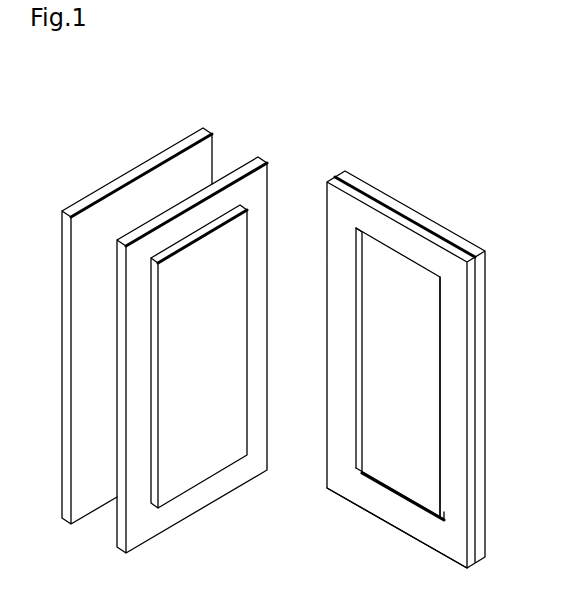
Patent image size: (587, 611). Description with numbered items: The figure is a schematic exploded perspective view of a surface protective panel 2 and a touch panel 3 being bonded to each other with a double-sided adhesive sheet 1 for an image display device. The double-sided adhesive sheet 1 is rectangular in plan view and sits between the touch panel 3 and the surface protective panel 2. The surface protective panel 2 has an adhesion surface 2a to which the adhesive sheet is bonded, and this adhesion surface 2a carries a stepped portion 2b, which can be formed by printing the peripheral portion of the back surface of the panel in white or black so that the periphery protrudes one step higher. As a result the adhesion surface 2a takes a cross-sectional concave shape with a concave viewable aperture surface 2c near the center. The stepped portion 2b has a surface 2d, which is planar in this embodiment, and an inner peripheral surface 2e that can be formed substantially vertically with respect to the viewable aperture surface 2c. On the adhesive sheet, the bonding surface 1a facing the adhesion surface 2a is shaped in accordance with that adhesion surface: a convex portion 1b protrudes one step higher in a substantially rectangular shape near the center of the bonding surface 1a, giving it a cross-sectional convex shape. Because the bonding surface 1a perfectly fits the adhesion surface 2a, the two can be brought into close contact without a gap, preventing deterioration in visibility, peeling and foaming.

The double-sided adhesive sheet 1 is at (200, 330).
The bonding surface 1a is at (237, 478).
The convex portion 1b is at (183, 477).
The surface protective panel 2 is at (387, 357).
The adhesion surface 2a is at (397, 468).
The stepped portion 2b is at (452, 397).
The viewable aperture surface 2c is at (397, 358).
The surface of the stepped portion 2d is at (455, 537).
The inner peripheral surface 2e is at (362, 293).
The touch panel 3 is at (180, 132).